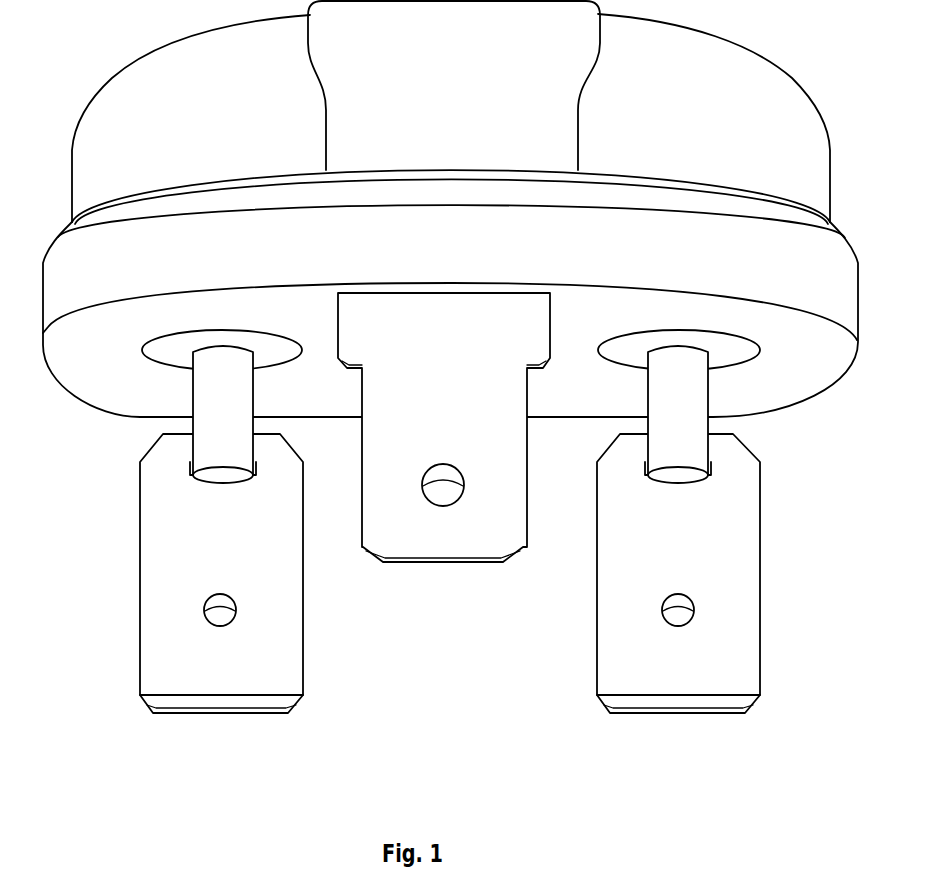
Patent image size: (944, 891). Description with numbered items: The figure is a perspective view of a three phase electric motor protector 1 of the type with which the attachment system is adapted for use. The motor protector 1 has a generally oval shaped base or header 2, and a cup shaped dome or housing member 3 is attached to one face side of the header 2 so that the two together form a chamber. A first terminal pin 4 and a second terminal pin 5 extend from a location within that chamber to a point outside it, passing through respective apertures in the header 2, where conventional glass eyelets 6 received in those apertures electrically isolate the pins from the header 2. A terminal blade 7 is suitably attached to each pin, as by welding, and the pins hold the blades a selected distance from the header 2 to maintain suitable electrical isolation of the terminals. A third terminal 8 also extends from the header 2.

The motor protector 1 is at (799, 63).
The header 2 is at (828, 272).
The housing member 3 is at (140, 70).
The first terminal pin 4 is at (203, 424).
The second terminal pin 5 is at (683, 388).
The glass eyelet 6 is at (268, 346).
The terminal blade 7 is at (275, 653).
The third terminal 8 is at (407, 523).